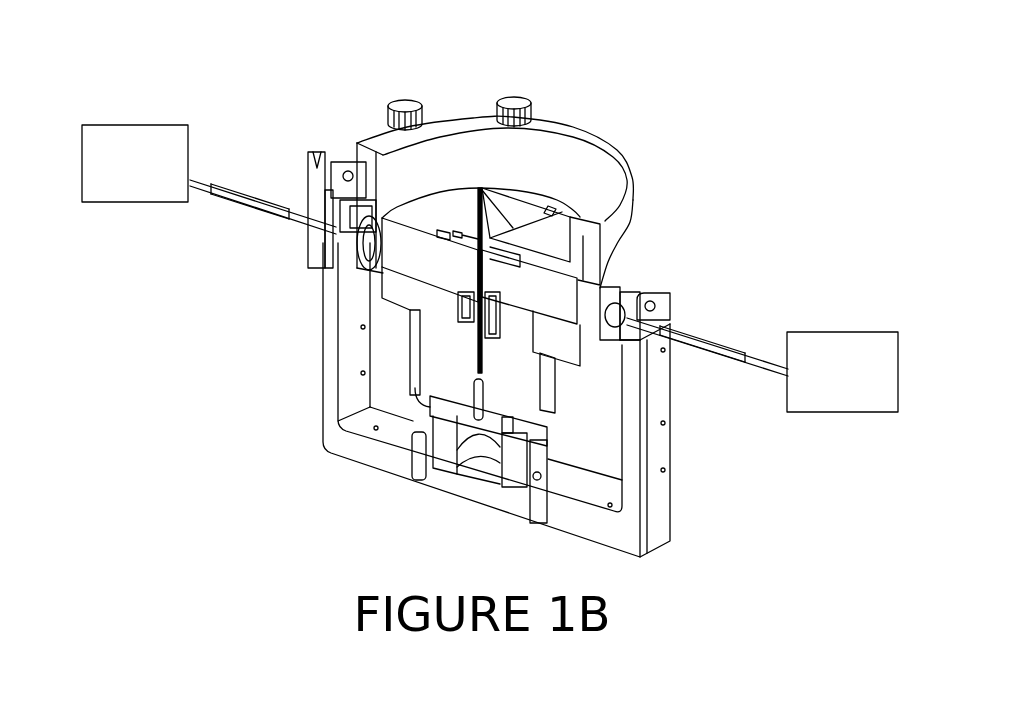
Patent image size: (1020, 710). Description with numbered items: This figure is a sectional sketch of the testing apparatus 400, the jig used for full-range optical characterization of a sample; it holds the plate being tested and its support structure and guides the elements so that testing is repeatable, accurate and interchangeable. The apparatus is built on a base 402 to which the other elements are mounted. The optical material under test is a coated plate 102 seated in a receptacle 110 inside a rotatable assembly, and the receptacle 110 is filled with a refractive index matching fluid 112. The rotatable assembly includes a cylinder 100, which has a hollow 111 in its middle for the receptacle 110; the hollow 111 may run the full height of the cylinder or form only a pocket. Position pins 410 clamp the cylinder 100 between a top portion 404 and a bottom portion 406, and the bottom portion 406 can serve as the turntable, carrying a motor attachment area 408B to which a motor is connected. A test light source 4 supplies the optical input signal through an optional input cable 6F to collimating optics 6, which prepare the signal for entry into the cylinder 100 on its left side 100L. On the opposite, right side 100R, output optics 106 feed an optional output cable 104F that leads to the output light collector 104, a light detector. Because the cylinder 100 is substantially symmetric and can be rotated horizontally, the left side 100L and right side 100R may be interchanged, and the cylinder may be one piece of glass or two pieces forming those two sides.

The test light source 4 is at (135, 163).
The collimating optics 6 is at (342, 133).
The input cable 6F is at (247, 180).
The cylinder 100 is at (391, 284).
The left side of the cylinder 100L is at (430, 260).
The right side of the cylinder 100R is at (531, 330).
The coated plate 102 is at (485, 190).
The output light collector 104 is at (842, 372).
The output cable 104F is at (697, 330).
The output optics 106 is at (634, 273).
The receptacle 110 is at (490, 212).
The hollow 111 is at (477, 271).
The refractive index matching fluid 112 is at (551, 213).
The testing apparatus 400 is at (406, 73).
The base 402 is at (335, 358).
The top portion 404 is at (555, 133).
The bottom portion 406 is at (432, 338).
The motor attachment area 408B is at (468, 464).
The position pins 410 is at (502, 97).